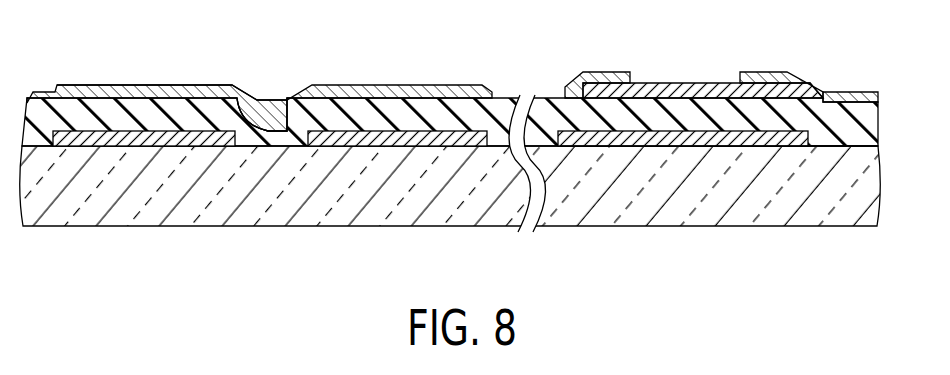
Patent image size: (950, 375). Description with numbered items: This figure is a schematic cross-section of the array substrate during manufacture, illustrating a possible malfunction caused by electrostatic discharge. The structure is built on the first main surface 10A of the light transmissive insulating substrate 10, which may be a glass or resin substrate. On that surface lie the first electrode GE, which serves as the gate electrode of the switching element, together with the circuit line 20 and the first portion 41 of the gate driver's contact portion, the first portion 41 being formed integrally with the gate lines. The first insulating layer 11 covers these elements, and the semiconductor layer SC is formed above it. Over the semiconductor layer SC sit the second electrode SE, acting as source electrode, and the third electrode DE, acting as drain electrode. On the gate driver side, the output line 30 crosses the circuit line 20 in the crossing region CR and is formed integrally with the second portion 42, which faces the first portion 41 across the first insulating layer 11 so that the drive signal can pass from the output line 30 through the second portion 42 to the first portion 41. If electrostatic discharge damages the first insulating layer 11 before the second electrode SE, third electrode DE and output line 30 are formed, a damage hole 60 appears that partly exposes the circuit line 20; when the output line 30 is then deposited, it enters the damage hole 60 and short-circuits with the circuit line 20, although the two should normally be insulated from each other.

The insulating substrate 10 is at (867, 197).
The first main surface 10A is at (866, 132).
The first insulating layer 11 is at (857, 110).
The circuit line 20 is at (147, 146).
The output line 30 is at (56, 84).
The first portion 41 is at (395, 142).
The second portion 42 is at (426, 86).
The damage hole 60 is at (280, 77).
The crossing region CR is at (232, 76).
The first electrode GE is at (780, 130).
The semiconductor layer SC is at (688, 83).
The second electrode SE is at (596, 72).
The third electrode DE is at (833, 92).